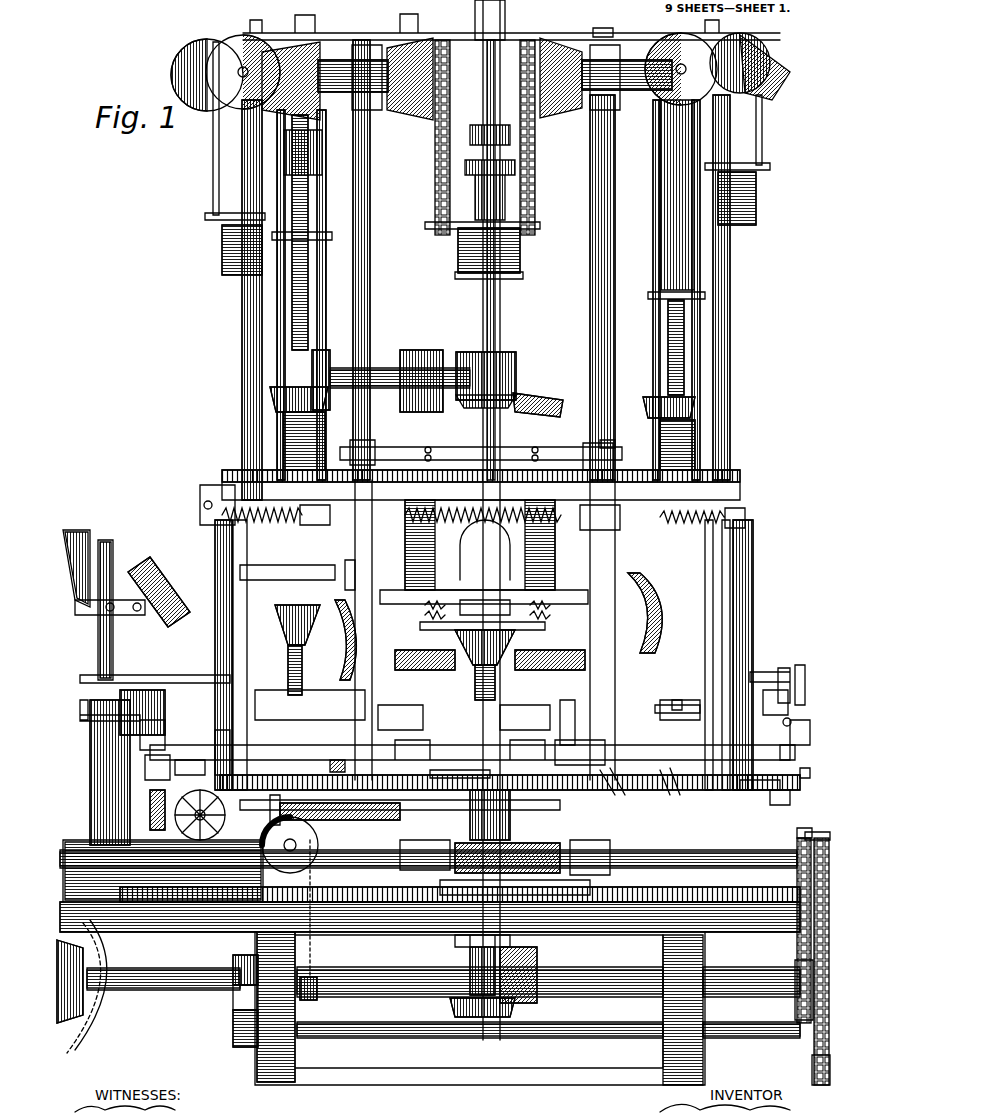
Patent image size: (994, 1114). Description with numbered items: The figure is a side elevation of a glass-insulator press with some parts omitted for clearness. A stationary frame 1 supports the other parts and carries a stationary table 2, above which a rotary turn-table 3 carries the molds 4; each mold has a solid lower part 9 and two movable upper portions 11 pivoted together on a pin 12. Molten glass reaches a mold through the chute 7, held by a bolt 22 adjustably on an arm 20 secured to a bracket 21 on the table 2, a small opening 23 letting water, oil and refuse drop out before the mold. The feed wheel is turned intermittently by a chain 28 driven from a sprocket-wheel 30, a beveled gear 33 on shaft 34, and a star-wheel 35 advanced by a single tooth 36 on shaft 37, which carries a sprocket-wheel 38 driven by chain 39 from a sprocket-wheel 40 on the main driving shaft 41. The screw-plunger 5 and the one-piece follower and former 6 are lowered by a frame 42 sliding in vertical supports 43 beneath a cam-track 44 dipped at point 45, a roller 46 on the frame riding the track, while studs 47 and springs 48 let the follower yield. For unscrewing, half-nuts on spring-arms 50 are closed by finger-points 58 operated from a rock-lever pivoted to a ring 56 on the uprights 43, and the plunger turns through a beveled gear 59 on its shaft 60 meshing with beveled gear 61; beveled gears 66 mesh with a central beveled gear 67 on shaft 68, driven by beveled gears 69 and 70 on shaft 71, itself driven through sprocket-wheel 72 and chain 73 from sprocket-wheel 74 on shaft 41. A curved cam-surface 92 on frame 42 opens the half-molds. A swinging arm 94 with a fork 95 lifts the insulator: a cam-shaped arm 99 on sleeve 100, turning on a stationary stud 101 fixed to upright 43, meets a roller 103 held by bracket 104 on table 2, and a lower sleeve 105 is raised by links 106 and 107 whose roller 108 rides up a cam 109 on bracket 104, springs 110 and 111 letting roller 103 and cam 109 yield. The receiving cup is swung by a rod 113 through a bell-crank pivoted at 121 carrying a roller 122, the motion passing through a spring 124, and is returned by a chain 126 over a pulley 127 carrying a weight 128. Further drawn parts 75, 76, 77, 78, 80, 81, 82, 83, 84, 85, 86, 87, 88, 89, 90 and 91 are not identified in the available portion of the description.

The stationary frame 1 is at (238, 993).
The stationary table 2 is at (750, 892).
The rotary turn-table 3 is at (590, 792).
The mold 4 is at (680, 712).
The screw-plunger 5 is at (475, 687).
The follower and former 6 is at (458, 642).
The chute 7 is at (156, 583).
The solid lower part 9 is at (235, 770).
The movable upper portions 11 is at (503, 710).
The pin 12 is at (353, 774).
The arm 20 is at (110, 603).
The bracket 21 is at (98, 640).
The bolt 22 is at (150, 620).
The small opening 23 is at (356, 582).
The chain 28 is at (115, 927).
The sprocket-wheel 30 is at (103, 1000).
The beveled gear 33 is at (98, 1020).
The shaft 34 is at (155, 973).
The star-wheel 35 is at (238, 955).
The single tooth 36 is at (238, 1045).
The shaft 37 is at (335, 1025).
The sprocket-wheel 38 is at (815, 1062).
The chain 39 is at (815, 930).
The sprocket-wheel 40 is at (830, 822).
The main driving shaft 41 is at (658, 864).
The frame 42 is at (560, 556).
The vertical supports 43 is at (728, 625).
The cam-track 44 is at (655, 573).
The point 45 is at (523, 660).
The roller 46 is at (460, 556).
The studs 47 is at (543, 622).
The springs 48 is at (463, 628).
The spring-arm 50 is at (560, 447).
The ring 56 is at (642, 465).
The finger-points 58 is at (536, 444).
The beveled gear 59 is at (695, 402).
The shaft 60 is at (668, 355).
The beveled gear 61 is at (317, 355).
The beveled gear 66 is at (513, 362).
The central beveled gear 67 is at (553, 396).
The shaft 68 is at (468, 966).
The beveled gear 69 is at (450, 1005).
The beveled gear 70 is at (523, 1005).
The shaft 71 is at (607, 967).
The sprocket-wheel 72 is at (797, 962).
The chain 73 is at (800, 920).
The sprocket-wheel 74 is at (798, 835).
The chain 75 is at (760, 118).
The weight 76 is at (755, 201).
The bracket 77 is at (650, 295).
The shaft 78 is at (755, 37).
The column 80 is at (730, 284).
The cross bar 81 is at (770, 165).
The cam pulley 82 is at (775, 38).
The coupling 83 is at (483, 70).
The worm gear 84 is at (542, 843).
The bearing 85 is at (533, 872).
The gear 86 is at (512, 818).
The bracket 87 is at (520, 726).
The bar 88 is at (430, 737).
The post 89 is at (567, 740).
The column 90 is at (648, 649).
The spring 91 is at (748, 525).
The curved cam-surface 92 is at (605, 510).
The swinging arm 94 is at (770, 705).
The fork 95 is at (780, 782).
The cam-shaped arm 99 is at (682, 710).
The sleeve 100 is at (808, 737).
The stationary stud 101 is at (803, 683).
The roller 103 is at (163, 705).
The bracket 104 is at (105, 788).
The sleeve 105 is at (803, 755).
The links 106 is at (803, 775).
The links 107 is at (803, 785).
The roller 108 is at (780, 803).
The cam 109 is at (175, 780).
The spring 110 is at (88, 712).
The spring 111 is at (155, 815).
The rod 113 is at (303, 814).
The pivot 121 is at (400, 785).
The roller 122 is at (532, 787).
The spring 124 is at (340, 818).
The chain 126 is at (312, 945).
The pulley 127 is at (313, 853).
The weight 128 is at (323, 980).